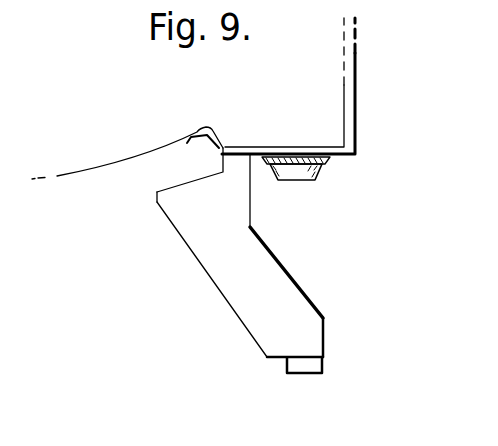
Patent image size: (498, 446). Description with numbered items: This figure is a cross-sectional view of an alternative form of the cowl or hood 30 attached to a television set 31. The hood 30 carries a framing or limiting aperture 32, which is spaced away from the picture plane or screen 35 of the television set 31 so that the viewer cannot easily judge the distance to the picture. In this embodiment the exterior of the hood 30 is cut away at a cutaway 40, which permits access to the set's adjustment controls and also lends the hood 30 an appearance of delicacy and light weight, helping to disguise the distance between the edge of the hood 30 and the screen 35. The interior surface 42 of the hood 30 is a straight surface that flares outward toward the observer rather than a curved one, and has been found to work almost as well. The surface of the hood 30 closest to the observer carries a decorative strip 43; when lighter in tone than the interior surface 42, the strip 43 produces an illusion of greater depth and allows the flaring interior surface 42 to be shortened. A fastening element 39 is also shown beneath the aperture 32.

The television set 31 is at (351, 101).
The picture plane or screen 35 is at (117, 160).
The framing or limiting aperture 32 is at (155, 201).
The fastener 39 is at (312, 180).
The cutaway 40 is at (272, 252).
The interior surface 42 is at (230, 306).
The cowl or hood 30 is at (325, 336).
The decorative strip 43 is at (324, 368).